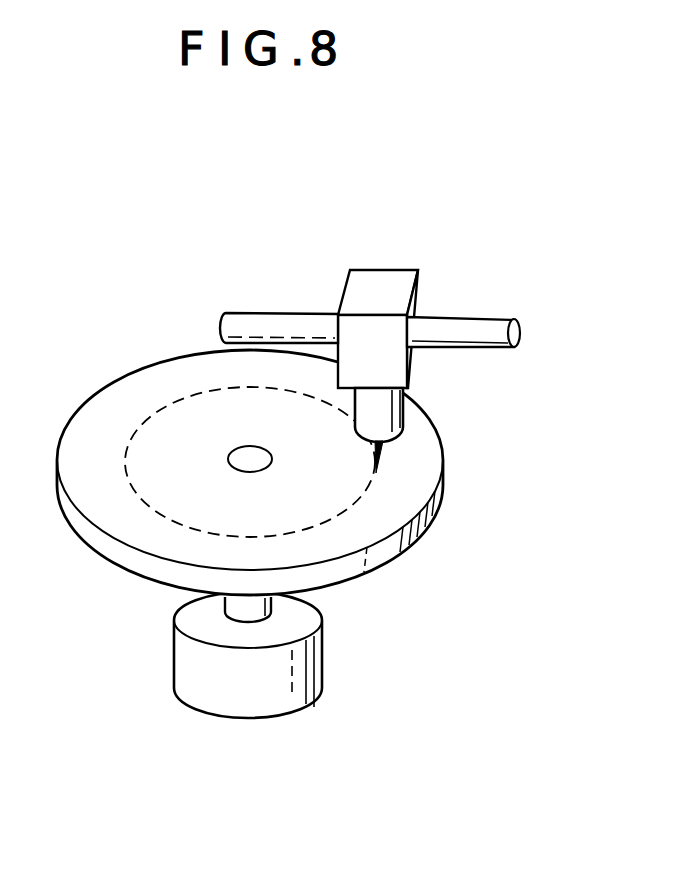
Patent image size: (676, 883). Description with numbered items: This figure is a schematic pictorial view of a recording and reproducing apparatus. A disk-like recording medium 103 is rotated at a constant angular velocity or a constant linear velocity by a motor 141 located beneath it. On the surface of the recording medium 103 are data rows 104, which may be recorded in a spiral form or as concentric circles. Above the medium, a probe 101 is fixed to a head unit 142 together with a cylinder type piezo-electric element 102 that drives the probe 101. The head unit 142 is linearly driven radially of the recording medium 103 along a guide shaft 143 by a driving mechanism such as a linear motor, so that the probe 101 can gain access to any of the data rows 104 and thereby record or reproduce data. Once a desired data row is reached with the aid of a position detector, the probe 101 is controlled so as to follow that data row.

The probe 101 is at (381, 448).
The cylinder type piezo-electric element 102 is at (390, 422).
The recording medium 103 is at (393, 548).
The data rows 104 is at (370, 480).
The motor 141 is at (275, 695).
The head unit 142 is at (397, 280).
The guide shaft 143 is at (493, 327).